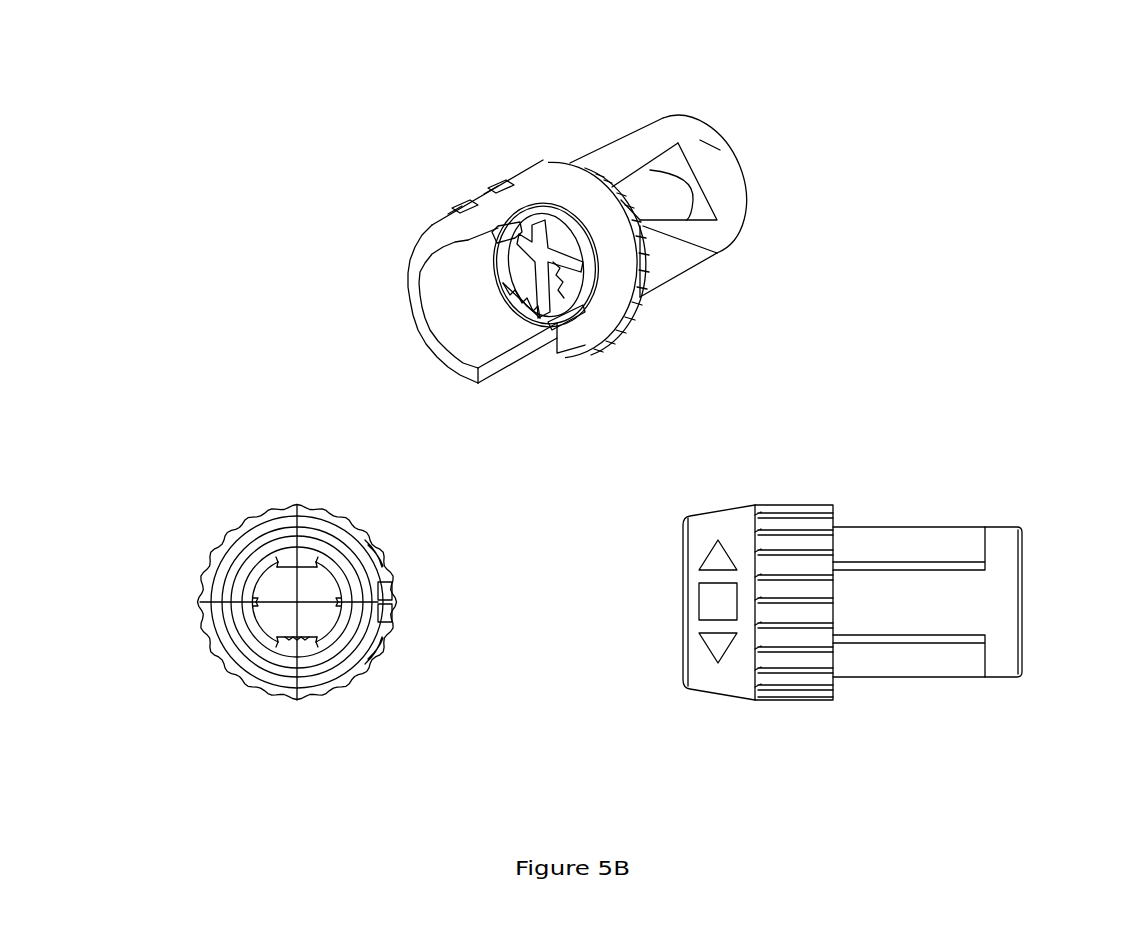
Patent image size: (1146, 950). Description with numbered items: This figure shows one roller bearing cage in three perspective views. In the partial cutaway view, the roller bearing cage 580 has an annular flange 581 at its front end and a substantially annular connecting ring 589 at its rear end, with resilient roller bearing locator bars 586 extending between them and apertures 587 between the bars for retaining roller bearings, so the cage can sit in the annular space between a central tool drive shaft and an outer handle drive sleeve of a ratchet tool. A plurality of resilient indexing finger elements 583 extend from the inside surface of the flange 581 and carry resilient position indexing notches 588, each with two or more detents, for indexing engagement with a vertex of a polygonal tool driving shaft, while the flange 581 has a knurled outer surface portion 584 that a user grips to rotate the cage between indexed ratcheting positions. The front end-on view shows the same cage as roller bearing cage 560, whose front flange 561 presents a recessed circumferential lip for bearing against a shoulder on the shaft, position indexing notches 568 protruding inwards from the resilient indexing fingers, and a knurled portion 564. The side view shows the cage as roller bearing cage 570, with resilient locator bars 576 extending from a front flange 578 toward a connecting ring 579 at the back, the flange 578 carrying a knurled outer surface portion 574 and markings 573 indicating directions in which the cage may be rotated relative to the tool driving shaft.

The roller bearing cage 560 is at (297, 745).
The front flange 561 is at (332, 538).
The knurled portion 564 is at (350, 700).
The position indexing notches 568 is at (320, 575).
The roller bearing cage 570 is at (883, 452).
The markings 573 is at (697, 603).
The knurled outer surface portion 574 is at (786, 551).
The resilient locator bars 576 is at (930, 540).
The front flange 578 is at (730, 700).
The connecting ring 579 is at (1007, 550).
The roller bearing cage 580 is at (483, 115).
The annular flange 581 is at (497, 380).
The resilient indexing finger elements 583 is at (523, 222).
The knurled outer surface portion 584 is at (580, 278).
The resilient roller bearing locator bars 586 is at (605, 163).
The apertures 587 is at (670, 193).
The resilient position indexing notches 588 is at (500, 237).
The connecting ring 589 is at (717, 172).